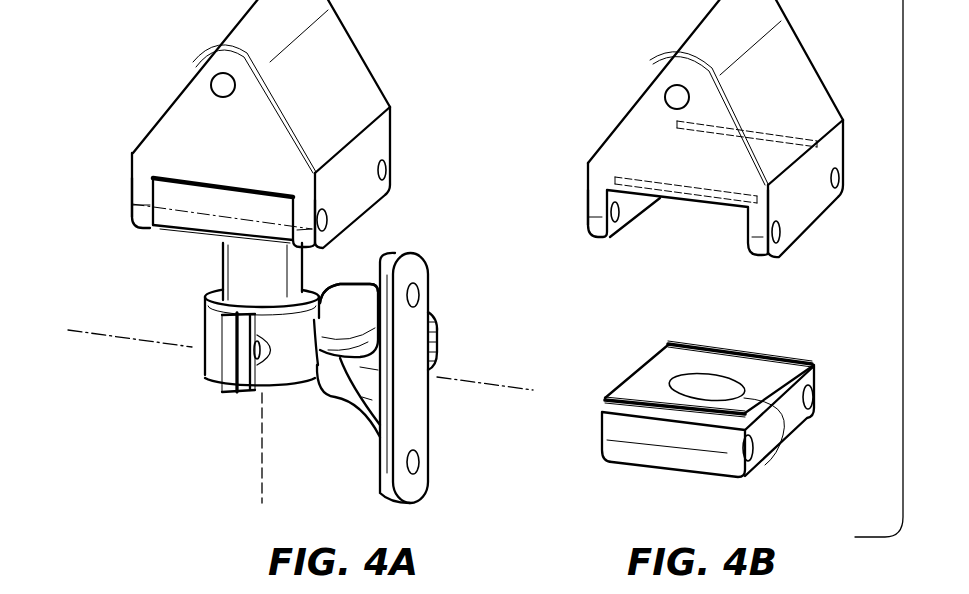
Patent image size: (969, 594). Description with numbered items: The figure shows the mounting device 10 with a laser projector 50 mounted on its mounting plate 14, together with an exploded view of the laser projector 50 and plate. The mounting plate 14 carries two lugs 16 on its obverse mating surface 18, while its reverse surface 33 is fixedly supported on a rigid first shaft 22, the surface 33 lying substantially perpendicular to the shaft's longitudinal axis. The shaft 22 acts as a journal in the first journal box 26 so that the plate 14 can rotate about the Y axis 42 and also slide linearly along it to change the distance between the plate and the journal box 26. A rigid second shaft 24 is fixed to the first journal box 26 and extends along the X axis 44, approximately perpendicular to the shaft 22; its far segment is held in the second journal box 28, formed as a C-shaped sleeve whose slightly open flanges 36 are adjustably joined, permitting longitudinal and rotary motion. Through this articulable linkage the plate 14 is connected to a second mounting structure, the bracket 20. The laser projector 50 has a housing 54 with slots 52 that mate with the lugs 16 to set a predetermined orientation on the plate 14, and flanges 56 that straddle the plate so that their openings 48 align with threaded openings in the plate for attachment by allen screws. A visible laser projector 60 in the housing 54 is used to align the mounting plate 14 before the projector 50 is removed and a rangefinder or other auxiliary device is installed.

In FIG. 4A, the mounting device 10 is at (182, 370).
In FIG. 4A, the mounting plate 14 is at (244, 325).
In FIG. 4B, the mounting plate 14 is at (733, 392).
In FIG. 4B, the lugs 16 is at (683, 345).
In FIG. 4A, the obverse mating surface 18 is at (155, 183).
In FIG. 4B, the obverse mating surface 18 is at (773, 447).
In FIG. 4A, the bracket 20 is at (420, 430).
In FIG. 4A, the first shaft 22 is at (228, 278).
In FIG. 4A, the second shaft 24 is at (322, 297).
In FIG. 4A, the first journal box 26 is at (231, 412).
In FIG. 4A, the second journal box 28 is at (467, 312).
In FIG. 4A, the reverse surface 33 is at (176, 232).
In FIG. 4B, the reverse surface 33 is at (788, 437).
In FIG. 4A, the flanges 36 is at (432, 310).
In FIG. 4A, the Y axis 42 is at (260, 498).
In FIG. 4A, the X axis 44 is at (80, 330).
In FIG. 4A, the openings 48 is at (388, 173).
In FIG. 4B, the openings 48 is at (618, 212).
In FIG. 4A, the laser projector 50 is at (272, 124).
In FIG. 4B, the laser projector 50 is at (692, 138).
In FIG. 4B, the slots 52 is at (767, 135).
In FIG. 4A, the housing 54 is at (151, 137).
In FIG. 4B, the housing 54 is at (616, 120).
In FIG. 4A, the flanges 56 is at (134, 210).
In FIG. 4B, the flanges 56 is at (600, 203).
In FIG. 4A, the visible laser projector 60 is at (212, 86).